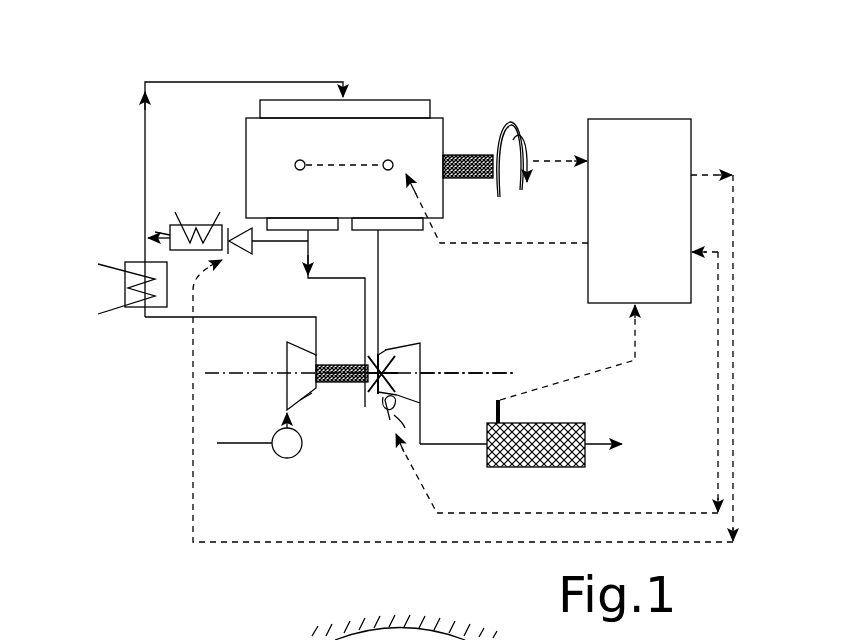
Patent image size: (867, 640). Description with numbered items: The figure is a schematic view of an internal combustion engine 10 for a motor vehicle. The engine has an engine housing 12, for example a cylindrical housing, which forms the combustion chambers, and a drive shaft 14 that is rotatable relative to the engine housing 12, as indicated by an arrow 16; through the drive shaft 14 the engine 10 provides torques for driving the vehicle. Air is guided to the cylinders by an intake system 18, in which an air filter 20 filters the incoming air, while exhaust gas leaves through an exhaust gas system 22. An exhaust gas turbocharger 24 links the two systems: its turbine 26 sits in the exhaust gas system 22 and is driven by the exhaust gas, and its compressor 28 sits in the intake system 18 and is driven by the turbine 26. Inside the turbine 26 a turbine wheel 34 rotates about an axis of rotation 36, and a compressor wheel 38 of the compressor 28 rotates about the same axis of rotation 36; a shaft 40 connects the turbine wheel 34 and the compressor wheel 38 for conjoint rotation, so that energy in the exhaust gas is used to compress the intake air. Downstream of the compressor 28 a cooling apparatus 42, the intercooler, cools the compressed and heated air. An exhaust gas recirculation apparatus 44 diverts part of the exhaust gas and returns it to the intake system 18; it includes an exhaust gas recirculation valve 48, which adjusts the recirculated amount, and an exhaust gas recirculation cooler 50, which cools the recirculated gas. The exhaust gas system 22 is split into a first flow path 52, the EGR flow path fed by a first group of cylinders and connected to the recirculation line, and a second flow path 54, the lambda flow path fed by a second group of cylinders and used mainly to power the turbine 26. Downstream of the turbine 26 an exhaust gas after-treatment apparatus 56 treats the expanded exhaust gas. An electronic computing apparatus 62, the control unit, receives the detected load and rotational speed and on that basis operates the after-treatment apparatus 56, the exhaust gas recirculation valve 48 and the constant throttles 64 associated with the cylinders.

The internal combustion engine 10 is at (446, 116).
The engine housing 12 is at (410, 125).
The drive shaft 14 is at (470, 150).
The arrow 16 is at (527, 135).
The intake system 18 is at (128, 77).
The air filter 20 is at (283, 459).
The exhaust gas system 22 is at (575, 469).
The exhaust gas turbocharger 24 is at (440, 353).
The turbine 26 is at (395, 335).
The compressor 28 is at (281, 381).
The turbine wheel 34 is at (443, 349).
The axis of rotation 36 is at (437, 375).
The compressor wheel 38 is at (307, 397).
The shaft 40 is at (337, 364).
The cooling apparatus 42 is at (133, 310).
The exhaust gas recirculation apparatus 44 is at (188, 204).
The exhaust gas recirculation valve 48 is at (240, 220).
The exhaust gas recirculation cooler 50 is at (170, 230).
The first flow path 52 is at (316, 272).
The second flow path 54 is at (384, 272).
The exhaust gas after-treatment apparatus 56 is at (573, 421).
The electronic computing apparatus 62 is at (692, 148).
The constant throttle 64 is at (296, 171).